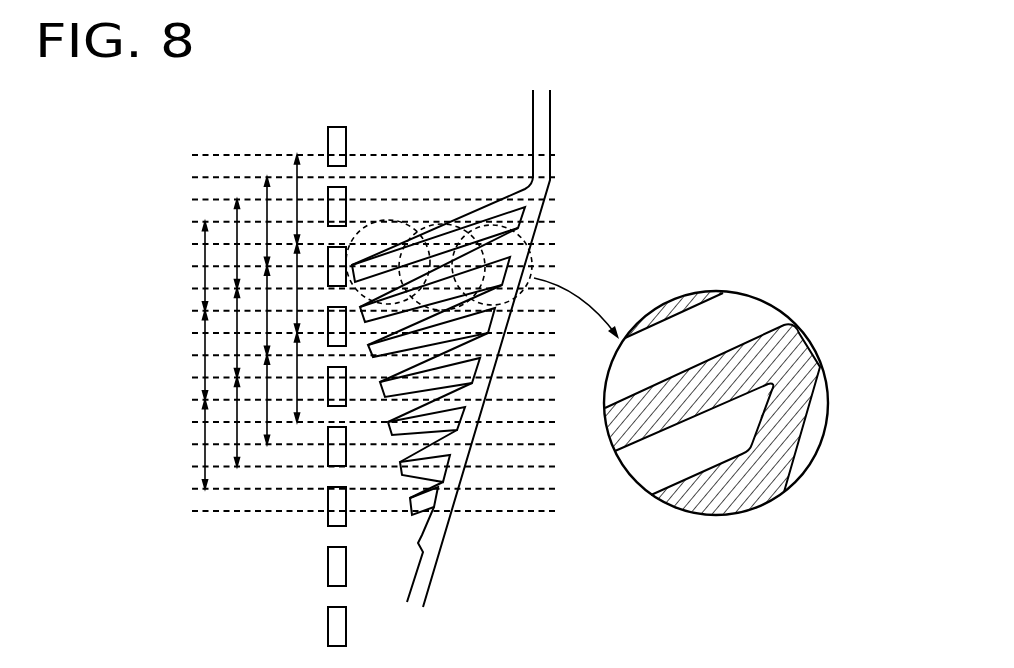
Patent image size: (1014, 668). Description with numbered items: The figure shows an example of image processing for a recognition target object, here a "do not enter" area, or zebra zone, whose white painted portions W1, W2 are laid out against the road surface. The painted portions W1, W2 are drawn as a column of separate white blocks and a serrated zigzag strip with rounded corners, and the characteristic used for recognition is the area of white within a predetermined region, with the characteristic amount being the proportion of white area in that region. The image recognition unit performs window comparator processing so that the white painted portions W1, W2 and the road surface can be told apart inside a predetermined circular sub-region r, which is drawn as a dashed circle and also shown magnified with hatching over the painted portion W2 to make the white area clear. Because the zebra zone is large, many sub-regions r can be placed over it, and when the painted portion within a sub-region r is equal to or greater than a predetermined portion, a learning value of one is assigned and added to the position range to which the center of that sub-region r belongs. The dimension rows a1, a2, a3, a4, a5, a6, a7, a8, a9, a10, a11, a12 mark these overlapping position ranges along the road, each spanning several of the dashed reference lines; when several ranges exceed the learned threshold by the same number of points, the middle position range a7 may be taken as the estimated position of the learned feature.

The first wire (W1) of wire W W1 is at (327, 140).
The second wire (W2) of wire W, serrated strip W2 is at (540, 130).
The sub-region r is at (470, 222).
The interval a1 is at (195, 444).
The interval a2 is at (227, 422).
The interval a3 is at (257, 399).
The interval a4 is at (287, 377).
The interval a5 is at (195, 355).
The interval a6 is at (227, 333).
The middle position range a7 is at (257, 310).
The interval a8 is at (287, 288).
The interval a9 is at (195, 266).
The interval a10 is at (227, 244).
The interval a11 is at (257, 221).
The interval a12 is at (287, 199).